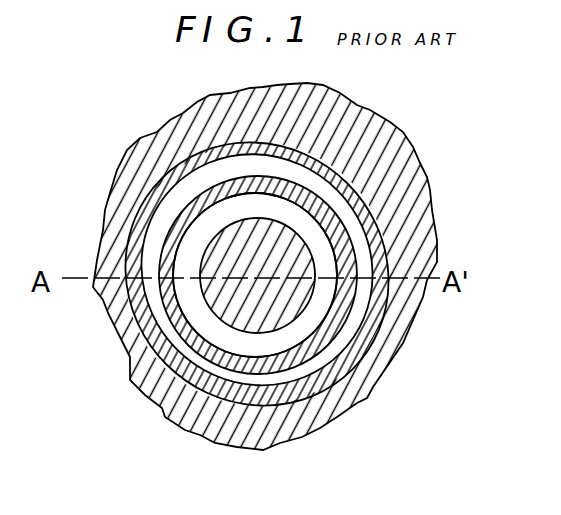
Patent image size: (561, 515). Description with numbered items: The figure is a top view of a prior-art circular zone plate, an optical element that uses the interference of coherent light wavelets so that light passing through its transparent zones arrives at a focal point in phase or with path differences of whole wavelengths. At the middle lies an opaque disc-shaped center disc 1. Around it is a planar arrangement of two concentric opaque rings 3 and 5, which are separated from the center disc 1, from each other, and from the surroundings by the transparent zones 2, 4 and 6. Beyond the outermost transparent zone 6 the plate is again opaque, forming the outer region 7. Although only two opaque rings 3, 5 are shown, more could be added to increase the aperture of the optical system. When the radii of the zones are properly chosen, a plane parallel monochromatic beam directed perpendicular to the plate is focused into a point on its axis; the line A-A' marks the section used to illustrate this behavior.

The center disc 1 is at (257, 275).
The transparent zone 2 is at (255, 275).
The opaque ring 3 is at (320, 220).
The transparent zone 4 is at (340, 213).
The opaque ring 5 is at (358, 189).
The transparent zone 6 is at (380, 206).
The outer region 7 is at (342, 168).